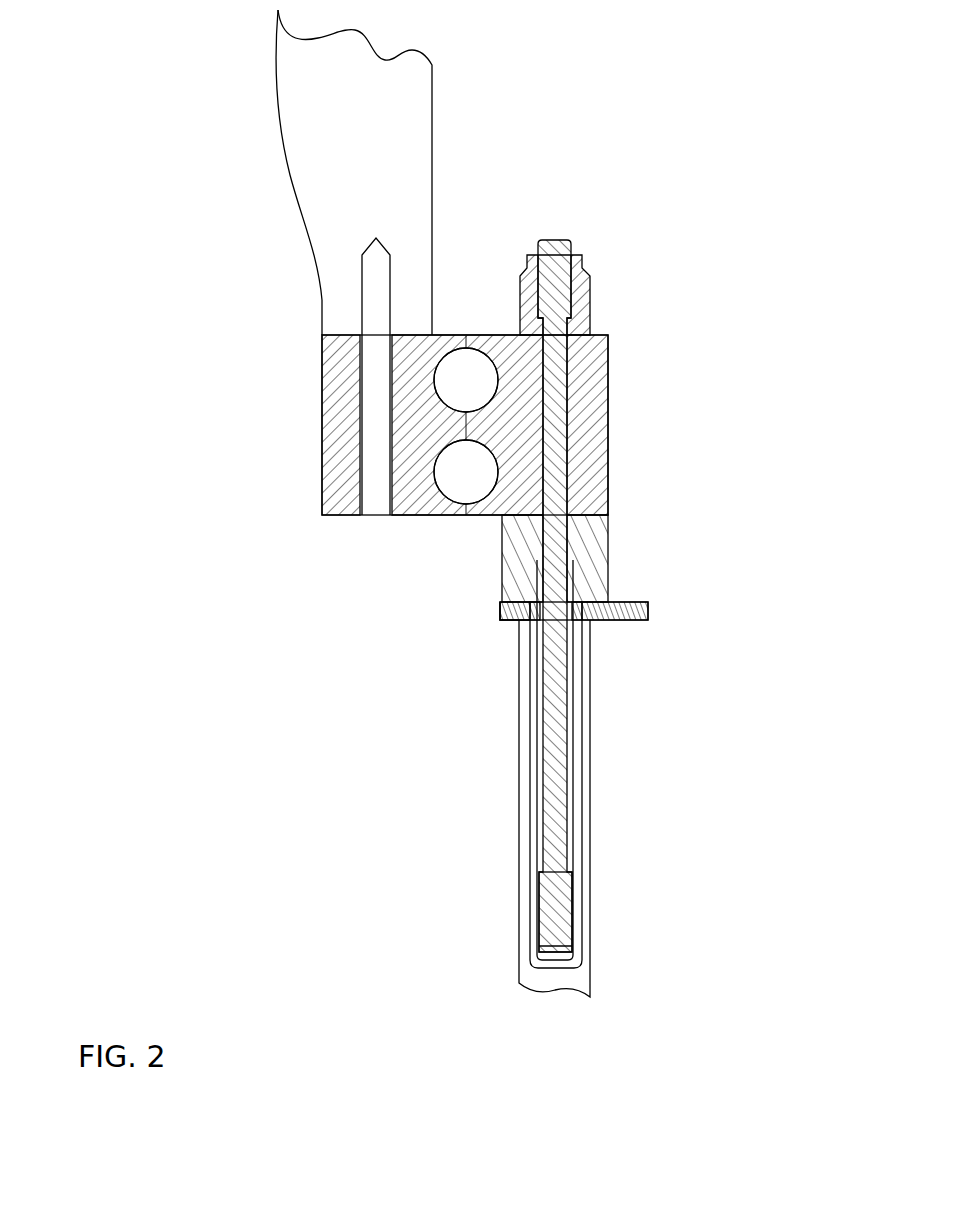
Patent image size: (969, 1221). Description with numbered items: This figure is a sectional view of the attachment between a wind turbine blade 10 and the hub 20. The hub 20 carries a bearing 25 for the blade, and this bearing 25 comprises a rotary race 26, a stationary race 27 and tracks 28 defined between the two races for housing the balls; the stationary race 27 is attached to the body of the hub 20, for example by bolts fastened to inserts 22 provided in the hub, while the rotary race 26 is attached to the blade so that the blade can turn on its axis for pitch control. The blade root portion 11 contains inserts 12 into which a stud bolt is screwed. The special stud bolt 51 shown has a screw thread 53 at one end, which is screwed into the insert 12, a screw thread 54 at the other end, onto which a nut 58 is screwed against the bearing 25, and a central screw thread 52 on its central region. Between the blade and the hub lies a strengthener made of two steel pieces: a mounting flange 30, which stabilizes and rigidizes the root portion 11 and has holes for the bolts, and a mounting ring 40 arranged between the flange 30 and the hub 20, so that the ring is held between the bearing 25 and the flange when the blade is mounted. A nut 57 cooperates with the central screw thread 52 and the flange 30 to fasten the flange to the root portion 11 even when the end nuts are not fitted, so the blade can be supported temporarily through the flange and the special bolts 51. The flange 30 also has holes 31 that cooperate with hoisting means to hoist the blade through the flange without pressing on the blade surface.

The blade 10 is at (245, 840).
The root portion 11 is at (592, 762).
The inserts 12 is at (535, 830).
The hub 20 is at (212, 211).
The inserts 22 is at (362, 292).
The bearing 25 is at (479, 288).
The rotary race 26 is at (600, 405).
The stationary race 27 is at (322, 443).
The tracks 28 is at (458, 483).
The mounting flange 30 is at (500, 618).
The holes 31 is at (630, 610).
The mounting ring 40 is at (597, 543).
The special stud bolt 51 is at (550, 720).
The central screw thread 52 is at (573, 628).
The screw thread 53 is at (573, 900).
The screw thread 54 is at (573, 248).
The nut 57 is at (528, 612).
The nut 58 is at (588, 303).